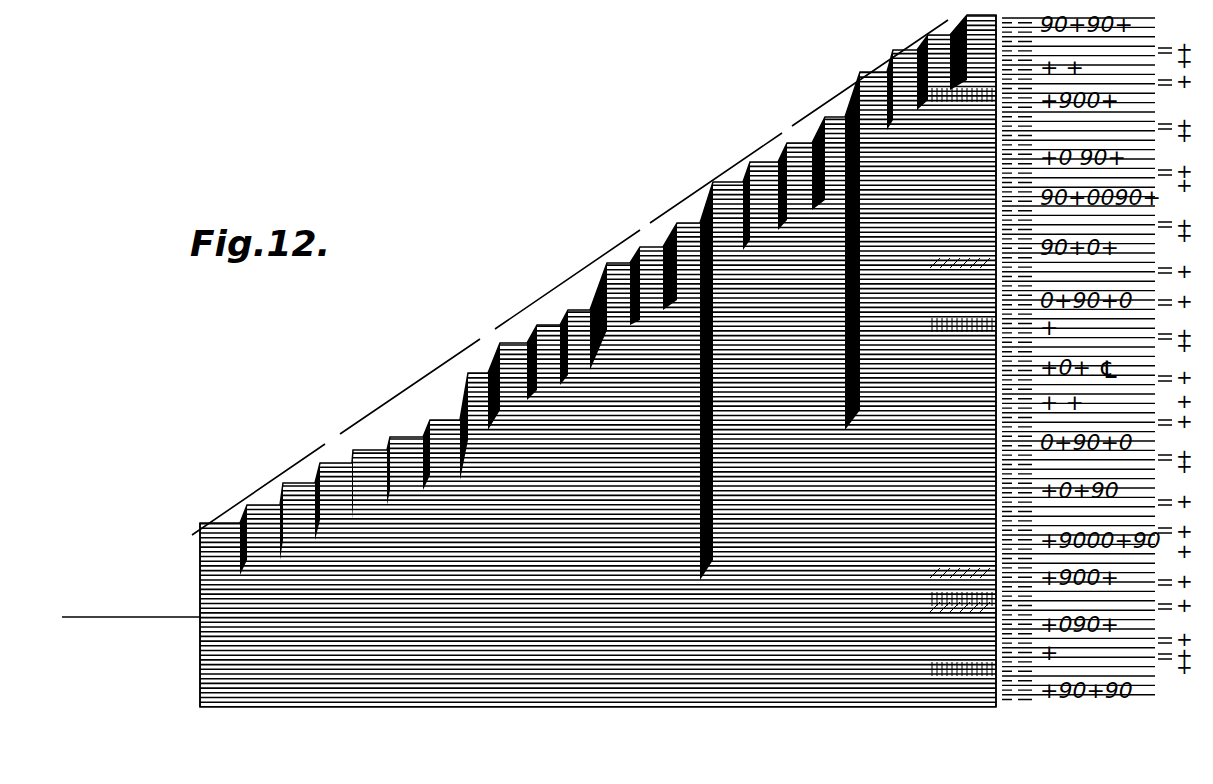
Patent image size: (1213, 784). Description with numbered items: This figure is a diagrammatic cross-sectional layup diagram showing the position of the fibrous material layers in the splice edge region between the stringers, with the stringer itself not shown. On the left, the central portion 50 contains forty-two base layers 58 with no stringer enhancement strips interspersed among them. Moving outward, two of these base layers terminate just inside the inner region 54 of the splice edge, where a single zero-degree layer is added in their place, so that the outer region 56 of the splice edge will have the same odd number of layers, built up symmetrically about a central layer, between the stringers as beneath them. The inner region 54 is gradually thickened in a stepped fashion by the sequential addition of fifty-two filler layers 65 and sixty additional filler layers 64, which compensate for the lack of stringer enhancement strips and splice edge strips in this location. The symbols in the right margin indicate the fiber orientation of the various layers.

The central portion 50 is at (262, 736).
The inner region of the splice edge 54 is at (207, 736).
The outer region of the splice edge 56 is at (987, 737).
The base layers 58 is at (228, 530).
The additional filler layers 64 is at (928, 391).
The filler layers 65 is at (947, 384).